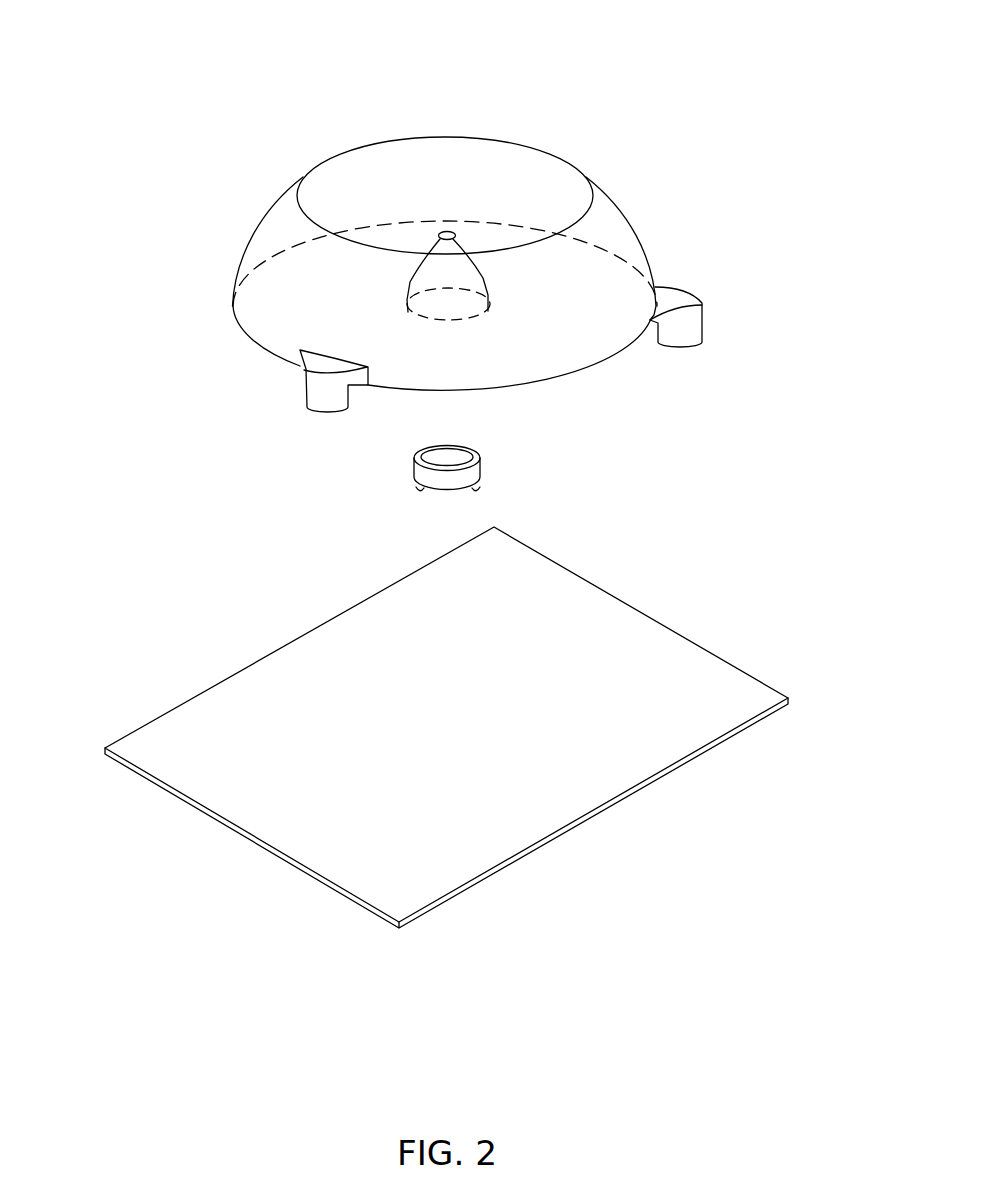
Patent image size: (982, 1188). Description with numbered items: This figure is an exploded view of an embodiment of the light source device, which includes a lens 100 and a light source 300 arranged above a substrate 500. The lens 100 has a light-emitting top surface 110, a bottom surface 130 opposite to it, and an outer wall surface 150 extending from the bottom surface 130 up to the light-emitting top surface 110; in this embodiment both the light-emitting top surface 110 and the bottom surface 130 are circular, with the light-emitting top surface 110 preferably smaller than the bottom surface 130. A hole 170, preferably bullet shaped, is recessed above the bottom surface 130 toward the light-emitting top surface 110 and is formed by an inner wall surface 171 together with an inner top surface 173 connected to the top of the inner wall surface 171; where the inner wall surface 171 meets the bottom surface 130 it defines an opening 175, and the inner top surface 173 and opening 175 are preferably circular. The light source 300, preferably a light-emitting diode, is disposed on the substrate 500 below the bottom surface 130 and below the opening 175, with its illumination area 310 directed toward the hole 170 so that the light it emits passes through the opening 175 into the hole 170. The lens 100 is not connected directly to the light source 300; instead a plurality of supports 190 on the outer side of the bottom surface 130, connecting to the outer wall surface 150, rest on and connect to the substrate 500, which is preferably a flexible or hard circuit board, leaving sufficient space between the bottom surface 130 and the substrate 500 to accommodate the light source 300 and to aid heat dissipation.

The lens 100 is at (420, 290).
The light-emitting top surface 110 is at (542, 167).
The bottom surface 130 is at (617, 357).
The outer wall surface 150 is at (640, 235).
The hole 170 is at (278, 231).
The inner wall surface 171 is at (412, 279).
The inner top surface 173 is at (440, 235).
The opening 175 is at (414, 318).
The supports 190 is at (321, 391).
The light source 300 is at (500, 451).
The illumination area 310 is at (462, 454).
The substrate 500 is at (648, 645).